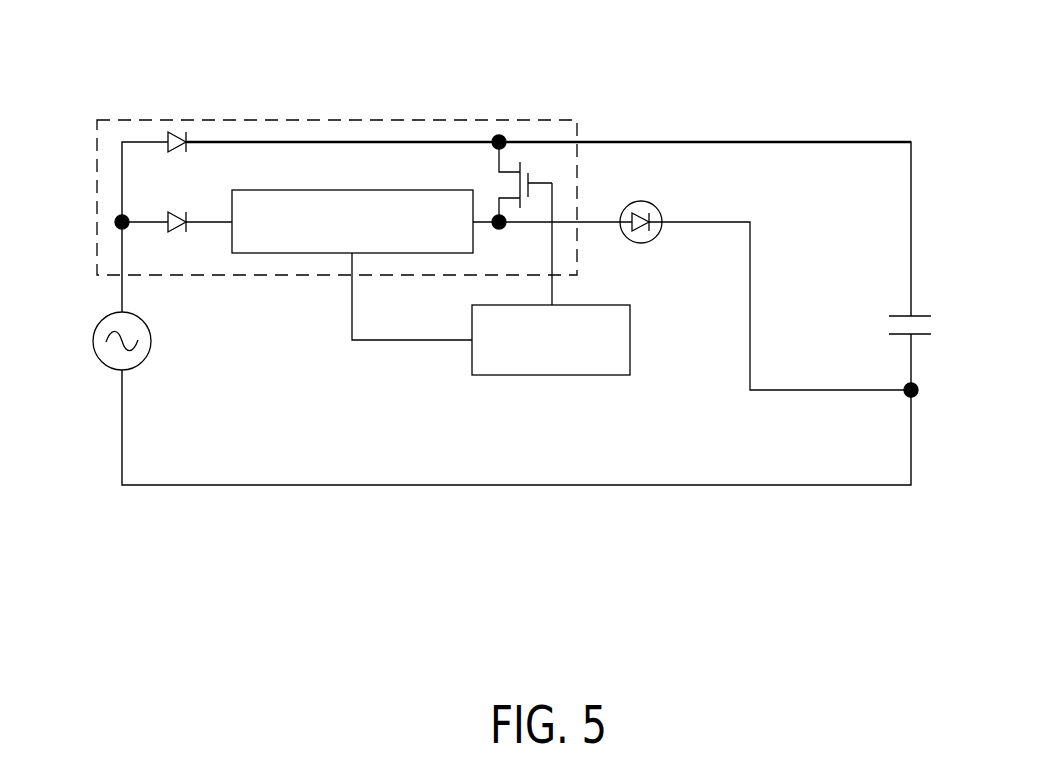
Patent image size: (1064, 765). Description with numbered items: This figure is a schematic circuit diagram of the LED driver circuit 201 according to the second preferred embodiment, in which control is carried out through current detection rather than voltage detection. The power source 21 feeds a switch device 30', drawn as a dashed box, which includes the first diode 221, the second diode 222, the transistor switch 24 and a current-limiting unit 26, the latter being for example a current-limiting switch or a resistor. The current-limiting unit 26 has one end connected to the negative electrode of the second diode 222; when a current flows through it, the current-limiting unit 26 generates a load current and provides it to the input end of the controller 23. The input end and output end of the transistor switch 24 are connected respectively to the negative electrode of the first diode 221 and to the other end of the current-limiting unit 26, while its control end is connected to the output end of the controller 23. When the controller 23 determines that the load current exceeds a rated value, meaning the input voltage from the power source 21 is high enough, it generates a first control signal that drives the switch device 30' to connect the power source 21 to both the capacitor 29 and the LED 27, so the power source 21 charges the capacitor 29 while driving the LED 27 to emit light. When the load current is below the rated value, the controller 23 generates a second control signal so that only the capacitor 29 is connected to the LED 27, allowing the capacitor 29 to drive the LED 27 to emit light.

The LED driver circuit 201 is at (952, 79).
The switch device 30' is at (355, 157).
The first diode 221 is at (188, 131).
The second diode 222 is at (188, 212).
The current-limiting unit 26 is at (276, 254).
The transistor switch 24 is at (529, 174).
The LED 27 is at (657, 208).
The capacitor 29 is at (920, 314).
The power source 21 is at (106, 318).
The controller 23 is at (613, 366).